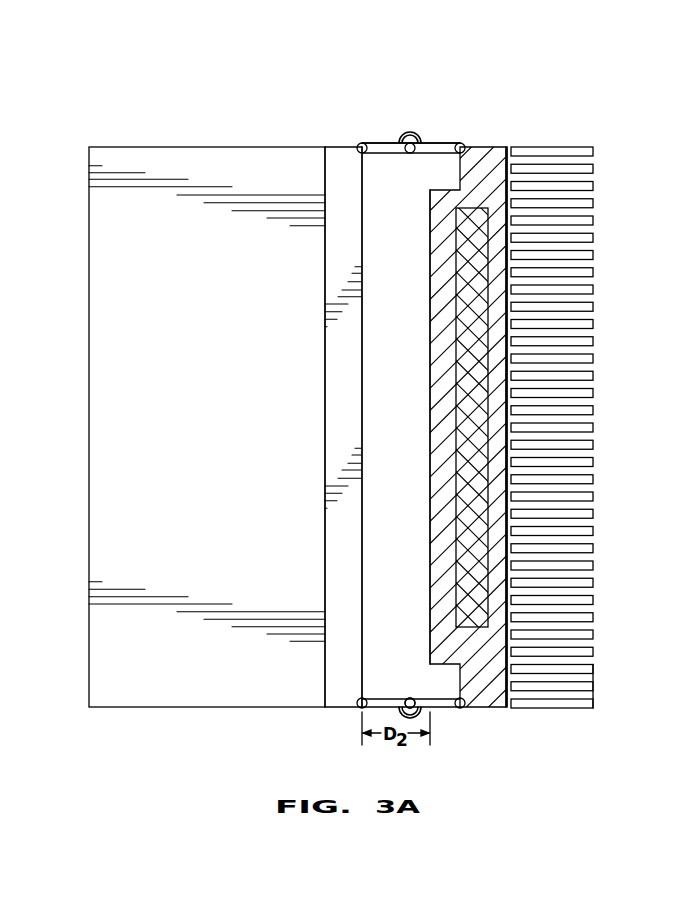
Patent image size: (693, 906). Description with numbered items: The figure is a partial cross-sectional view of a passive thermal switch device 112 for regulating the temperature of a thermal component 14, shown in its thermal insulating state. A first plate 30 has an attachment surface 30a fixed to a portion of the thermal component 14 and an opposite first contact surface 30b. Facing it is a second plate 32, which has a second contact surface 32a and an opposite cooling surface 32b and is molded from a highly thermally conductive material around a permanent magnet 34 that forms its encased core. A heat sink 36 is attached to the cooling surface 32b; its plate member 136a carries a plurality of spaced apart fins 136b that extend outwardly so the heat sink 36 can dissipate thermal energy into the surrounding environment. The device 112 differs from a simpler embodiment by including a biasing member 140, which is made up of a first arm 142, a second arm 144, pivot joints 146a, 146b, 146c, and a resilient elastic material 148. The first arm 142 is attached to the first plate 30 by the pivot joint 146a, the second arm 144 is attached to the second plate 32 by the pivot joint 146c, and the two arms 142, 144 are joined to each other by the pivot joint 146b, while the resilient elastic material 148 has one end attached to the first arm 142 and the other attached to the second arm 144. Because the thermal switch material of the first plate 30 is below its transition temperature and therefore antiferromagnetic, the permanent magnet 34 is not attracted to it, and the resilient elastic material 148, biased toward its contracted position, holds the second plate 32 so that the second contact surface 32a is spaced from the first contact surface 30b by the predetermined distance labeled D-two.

The thermal component 14 is at (174, 134).
The first plate 30 is at (342, 147).
The attachment surface 30a is at (325, 177).
The first contact surface 30b is at (363, 181).
The second plate 32 is at (487, 142).
The second contact surface 32a is at (428, 249).
The cooling surface 32b is at (508, 444).
The permanent magnet 34 is at (468, 323).
The heat sink 36 is at (602, 212).
The passive thermal switch device 112 is at (380, 60).
The biasing member 140 is at (411, 122).
The first arm 142 is at (388, 143).
The second arm 144 is at (441, 143).
The pivot joint 146a is at (358, 144).
The pivot joint 146b is at (412, 153).
The pivot joint 146c is at (462, 143).
The resilient elastic material 148 is at (418, 143).
The fin root 136a is at (510, 708).
The fin tip 136b is at (593, 705).